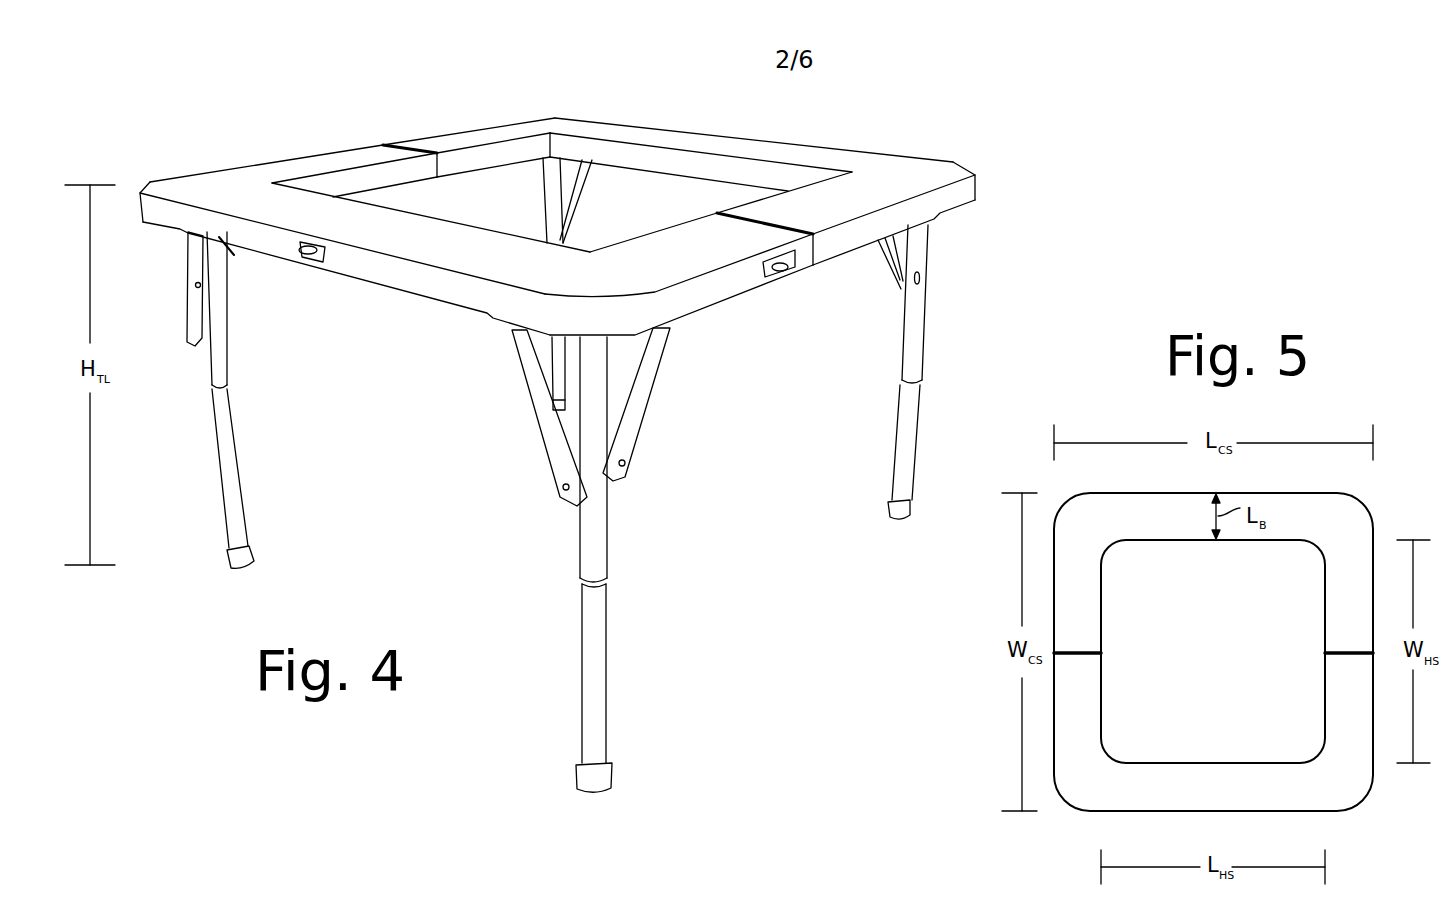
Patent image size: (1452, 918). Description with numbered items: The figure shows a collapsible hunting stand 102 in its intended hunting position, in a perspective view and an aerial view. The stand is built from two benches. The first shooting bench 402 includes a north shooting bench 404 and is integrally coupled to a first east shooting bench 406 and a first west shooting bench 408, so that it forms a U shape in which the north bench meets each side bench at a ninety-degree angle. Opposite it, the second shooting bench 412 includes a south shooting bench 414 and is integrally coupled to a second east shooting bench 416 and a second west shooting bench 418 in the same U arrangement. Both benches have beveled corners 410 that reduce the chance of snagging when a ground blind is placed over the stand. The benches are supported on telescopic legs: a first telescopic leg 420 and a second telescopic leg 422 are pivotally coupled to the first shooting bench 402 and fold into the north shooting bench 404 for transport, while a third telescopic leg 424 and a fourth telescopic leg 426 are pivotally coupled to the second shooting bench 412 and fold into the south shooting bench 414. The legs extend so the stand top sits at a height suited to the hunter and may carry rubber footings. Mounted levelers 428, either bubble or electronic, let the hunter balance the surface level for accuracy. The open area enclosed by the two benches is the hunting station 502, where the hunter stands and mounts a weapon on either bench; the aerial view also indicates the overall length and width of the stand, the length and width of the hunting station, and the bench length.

In FIG. 4, the collapsible hunting stand 102 is at (905, 83).
In FIG. 5, the collapsible hunting stand 102 is at (1098, 403).
In FIG. 4, the first shooting bench 402 is at (244, 201).
In FIG. 5, the first shooting bench 402 is at (1191, 800).
In FIG. 4, the north shooting bench 404 is at (397, 287).
In FIG. 4, the first east shooting bench 406 is at (243, 163).
In FIG. 4, the first west shooting bench 408 is at (722, 307).
In FIG. 4, the beveled corners 410 is at (146, 186).
In FIG. 4, the second shooting bench 412 is at (901, 187).
In FIG. 5, the second shooting bench 412 is at (1176, 526).
In FIG. 4, the south shooting bench 414 is at (728, 133).
In FIG. 4, the second east shooting bench 416 is at (462, 128).
In FIG. 4, the second west shooting bench 418 is at (938, 208).
In FIG. 4, the first telescopic leg 420 is at (608, 709).
In FIG. 4, the second telescopic leg 422 is at (238, 457).
In FIG. 4, the third telescopic leg 424 is at (542, 205).
In FIG. 4, the fourth telescopic leg 426 is at (893, 445).
In FIG. 4, the mounted levelers 428 is at (307, 265).
In FIG. 5, the hunting station 502 is at (1237, 657).